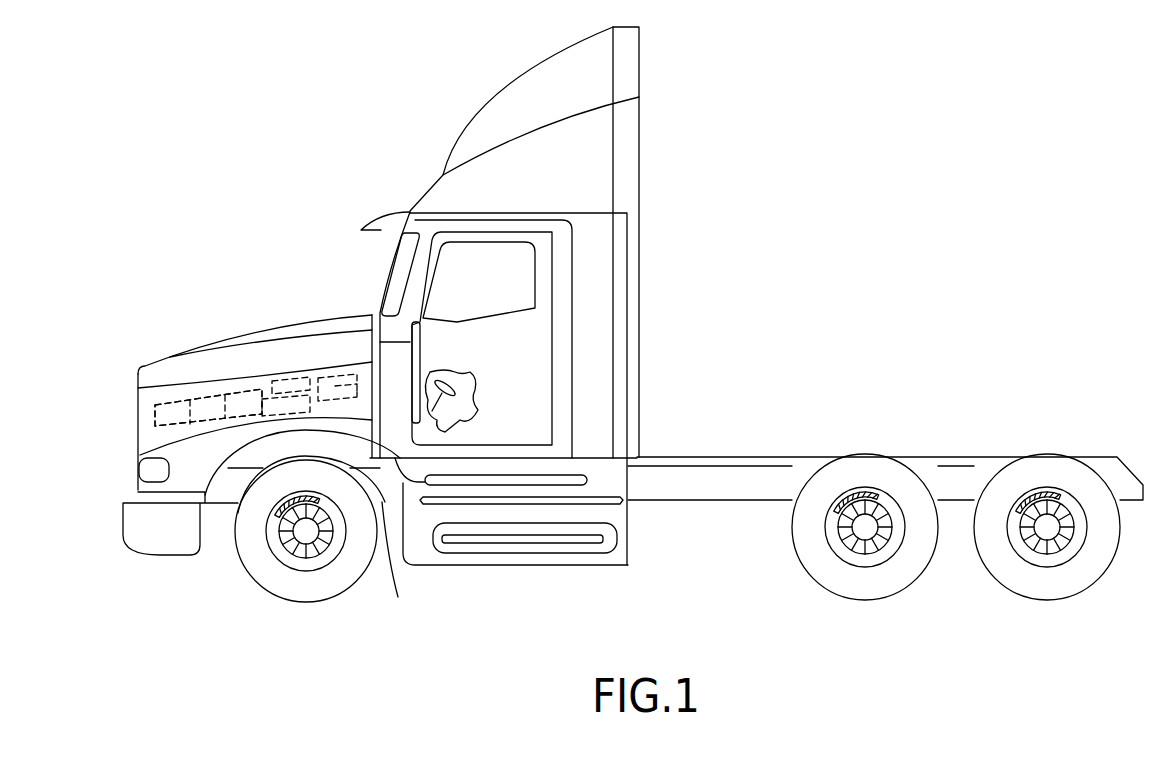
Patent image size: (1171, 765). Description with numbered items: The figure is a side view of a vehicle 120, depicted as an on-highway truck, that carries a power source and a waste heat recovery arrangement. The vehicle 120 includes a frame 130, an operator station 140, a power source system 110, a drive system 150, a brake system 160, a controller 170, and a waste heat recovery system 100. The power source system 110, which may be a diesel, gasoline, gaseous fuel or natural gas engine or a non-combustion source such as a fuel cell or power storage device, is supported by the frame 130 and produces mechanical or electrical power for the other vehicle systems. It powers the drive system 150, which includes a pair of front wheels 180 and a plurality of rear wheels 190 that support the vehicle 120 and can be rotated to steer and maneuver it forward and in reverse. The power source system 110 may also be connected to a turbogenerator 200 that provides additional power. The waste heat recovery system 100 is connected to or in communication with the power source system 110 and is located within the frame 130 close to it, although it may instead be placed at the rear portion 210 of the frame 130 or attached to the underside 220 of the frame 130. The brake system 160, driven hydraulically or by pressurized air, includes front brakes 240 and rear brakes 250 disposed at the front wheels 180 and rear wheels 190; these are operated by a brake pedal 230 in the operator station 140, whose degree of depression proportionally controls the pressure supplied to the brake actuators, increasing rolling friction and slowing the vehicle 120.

The vehicle 120 is at (912, 100).
The operator station 140 is at (508, 268).
The brake pedal 230 is at (478, 392).
The turbogenerator 200 is at (165, 360).
The controller 170 is at (265, 422).
The waste heat recovery system 100 is at (190, 392).
The power source system 110 is at (152, 414).
The drive system 150 is at (258, 400).
The brake system 160 is at (330, 383).
The front wheels 180 is at (325, 595).
The front brakes 240 is at (273, 510).
The underside of the frame 220 is at (397, 578).
The rear portion of the frame 210 is at (642, 455).
The frame 130 is at (698, 500).
The rear wheels 190 is at (863, 600).
The rear brakes 250 is at (1033, 490).